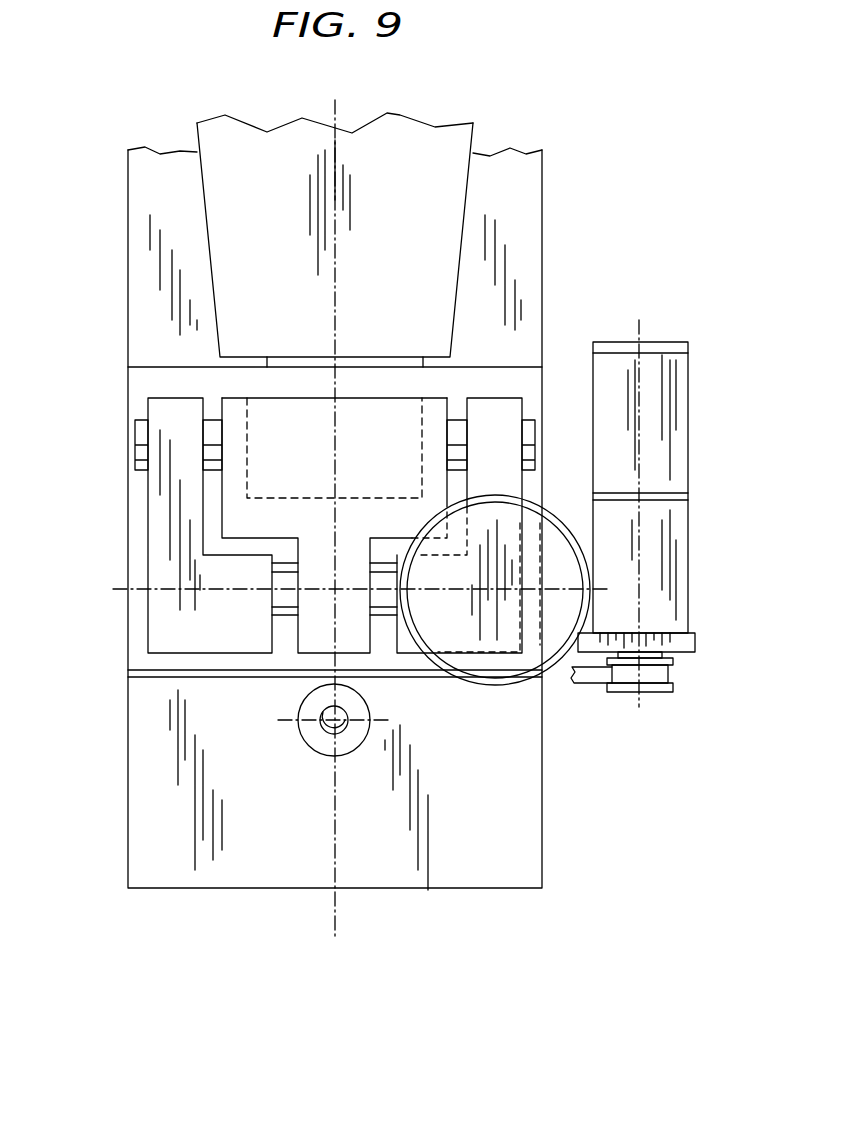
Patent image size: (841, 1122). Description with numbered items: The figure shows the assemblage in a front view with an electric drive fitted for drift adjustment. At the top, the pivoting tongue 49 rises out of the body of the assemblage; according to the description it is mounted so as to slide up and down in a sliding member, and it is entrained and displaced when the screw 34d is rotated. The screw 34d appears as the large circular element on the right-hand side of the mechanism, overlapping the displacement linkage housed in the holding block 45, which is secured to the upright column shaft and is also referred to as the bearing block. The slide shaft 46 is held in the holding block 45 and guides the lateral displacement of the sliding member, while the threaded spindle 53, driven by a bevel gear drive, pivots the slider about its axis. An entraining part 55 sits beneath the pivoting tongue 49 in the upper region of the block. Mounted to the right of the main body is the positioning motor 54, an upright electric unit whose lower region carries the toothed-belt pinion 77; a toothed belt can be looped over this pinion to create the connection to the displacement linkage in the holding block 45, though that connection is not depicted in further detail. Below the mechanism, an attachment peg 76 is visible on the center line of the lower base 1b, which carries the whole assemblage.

The base body 1b is at (148, 845).
The pivoting tongue 49 is at (220, 187).
The entraining part 55 is at (263, 385).
The holding block 45 is at (168, 548).
The slide shaft 46 is at (136, 437).
The threaded spindle 53 is at (277, 588).
The screw 34d is at (527, 660).
The positioning motor 54 is at (660, 385).
The toothed-belt pinion 77 is at (657, 675).
The attachment peg 76 is at (305, 720).